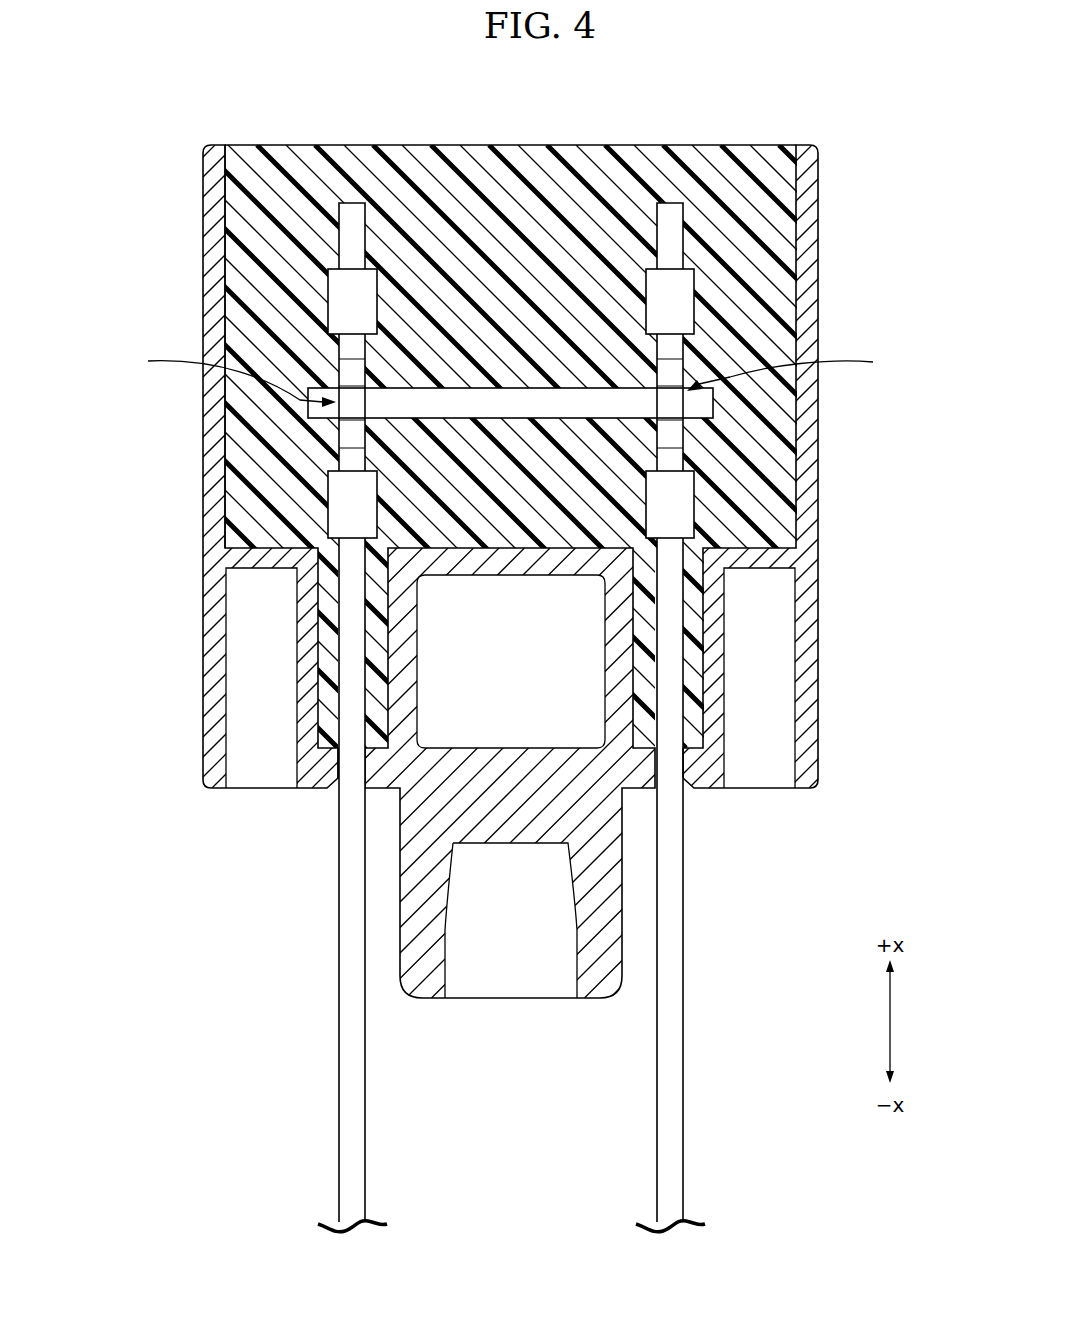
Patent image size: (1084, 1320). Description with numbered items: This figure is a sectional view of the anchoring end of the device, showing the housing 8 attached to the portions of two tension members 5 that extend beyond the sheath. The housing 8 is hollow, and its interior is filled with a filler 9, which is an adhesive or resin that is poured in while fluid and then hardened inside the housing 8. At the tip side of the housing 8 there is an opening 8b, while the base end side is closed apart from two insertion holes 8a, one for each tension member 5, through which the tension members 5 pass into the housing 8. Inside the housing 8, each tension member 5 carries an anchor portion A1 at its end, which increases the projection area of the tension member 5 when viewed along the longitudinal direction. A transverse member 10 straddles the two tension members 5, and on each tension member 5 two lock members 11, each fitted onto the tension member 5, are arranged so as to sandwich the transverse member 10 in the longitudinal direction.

The tension member 5 is at (352, 1096).
The housing 8 is at (182, 178).
The insertion hole 8a is at (338, 762).
The opening 8b is at (227, 162).
The filler 9 is at (543, 150).
The transverse member 10 is at (705, 408).
The lock member 11 is at (338, 302).
The anchor portion A1 is at (513, 377).